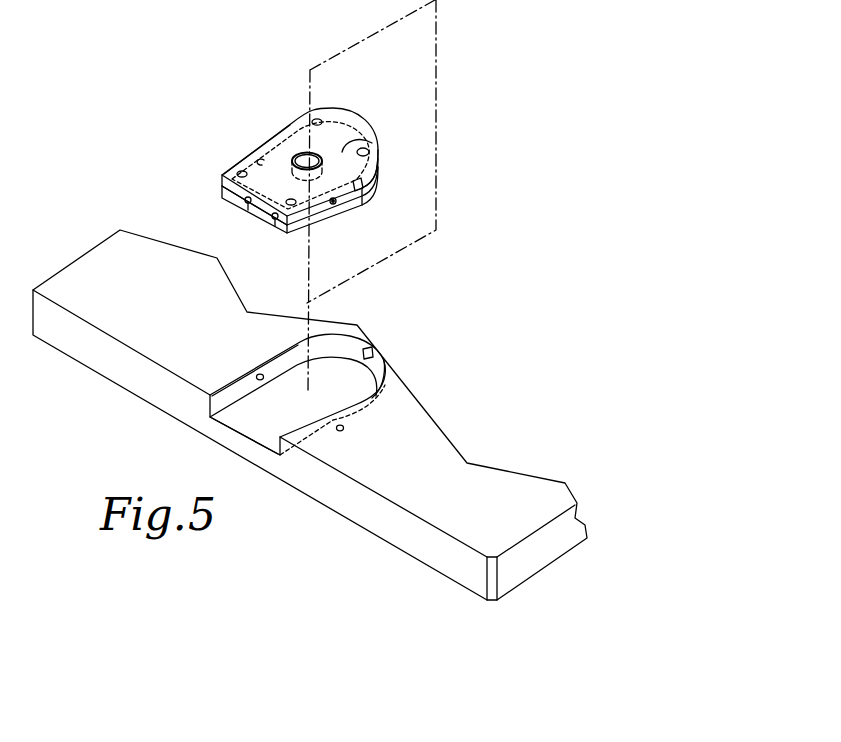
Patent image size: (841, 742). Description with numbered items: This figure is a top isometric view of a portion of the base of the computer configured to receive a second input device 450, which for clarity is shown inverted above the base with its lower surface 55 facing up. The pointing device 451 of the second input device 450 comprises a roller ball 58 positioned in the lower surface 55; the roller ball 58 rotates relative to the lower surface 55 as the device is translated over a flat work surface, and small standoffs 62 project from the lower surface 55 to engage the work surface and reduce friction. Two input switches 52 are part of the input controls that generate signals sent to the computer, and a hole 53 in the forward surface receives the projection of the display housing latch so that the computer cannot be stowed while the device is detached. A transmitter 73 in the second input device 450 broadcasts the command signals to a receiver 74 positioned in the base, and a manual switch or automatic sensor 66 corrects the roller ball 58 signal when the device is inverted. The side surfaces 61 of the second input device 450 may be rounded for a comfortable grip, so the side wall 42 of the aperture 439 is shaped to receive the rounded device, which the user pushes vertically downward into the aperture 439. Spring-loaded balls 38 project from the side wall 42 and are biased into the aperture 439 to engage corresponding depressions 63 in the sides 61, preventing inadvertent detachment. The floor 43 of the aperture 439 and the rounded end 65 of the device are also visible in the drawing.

The spring-loaded balls 38 is at (260, 374).
The side wall 42 is at (227, 395).
The recess floor 43 is at (263, 420).
The aperture 439 is at (354, 390).
The second input device 450 is at (200, 203).
The pointing device 451 is at (333, 174).
The input switches 52 is at (220, 197).
The hole 53 is at (250, 205).
The lower surface 55 is at (360, 146).
The roller ball 58 is at (306, 154).
The side surfaces 61 is at (258, 150).
The standoffs 62 is at (320, 119).
The depressions 63 is at (254, 160).
The rounded end 65 is at (374, 175).
The manual switch or automatic sensor 66 is at (367, 193).
The transmitter 73 is at (273, 224).
The receiver 74 is at (368, 347).